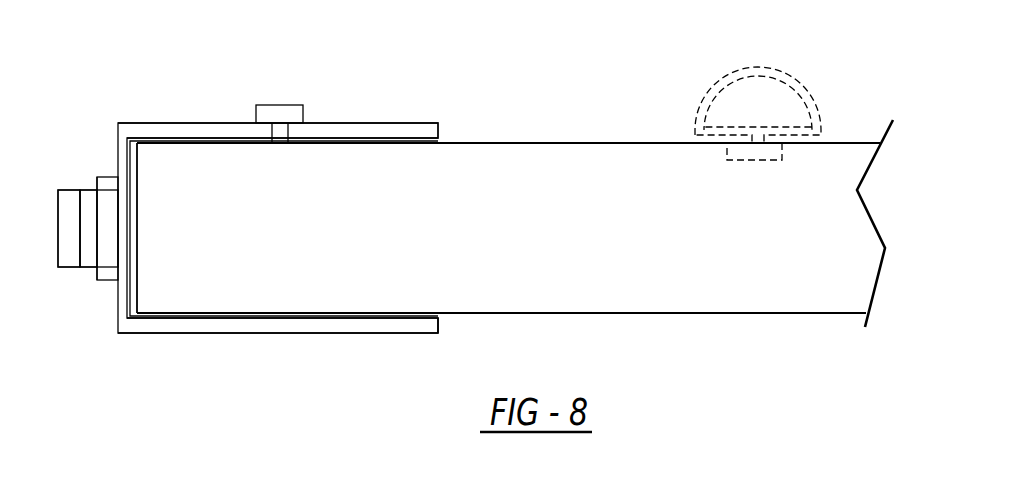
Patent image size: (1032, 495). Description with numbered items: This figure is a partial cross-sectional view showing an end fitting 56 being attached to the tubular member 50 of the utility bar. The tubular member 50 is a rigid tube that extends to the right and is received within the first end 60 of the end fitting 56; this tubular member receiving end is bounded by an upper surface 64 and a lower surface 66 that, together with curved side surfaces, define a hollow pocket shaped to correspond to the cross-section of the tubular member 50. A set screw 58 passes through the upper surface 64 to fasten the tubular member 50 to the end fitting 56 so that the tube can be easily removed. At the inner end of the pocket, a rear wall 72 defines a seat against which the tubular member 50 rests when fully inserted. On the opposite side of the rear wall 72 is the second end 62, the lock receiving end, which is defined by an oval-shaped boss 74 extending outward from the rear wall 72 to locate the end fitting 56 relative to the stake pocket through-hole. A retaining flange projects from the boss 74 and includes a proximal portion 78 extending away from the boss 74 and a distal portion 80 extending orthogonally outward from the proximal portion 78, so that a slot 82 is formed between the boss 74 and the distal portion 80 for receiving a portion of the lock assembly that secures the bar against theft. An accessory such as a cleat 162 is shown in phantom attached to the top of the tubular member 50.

The tubular member 50 is at (650, 316).
The end fitting 56 is at (351, 336).
The set screw 58 is at (280, 113).
The first end 60 is at (450, 327).
The second end 62 is at (73, 288).
The upper surface 64 is at (415, 130).
The lower surface 66 is at (406, 325).
The rear wall 72 is at (128, 283).
The boss 74 is at (108, 228).
The proximal portion 78 is at (90, 255).
The distal portion 80 is at (70, 197).
The slot 82 is at (89, 197).
The cleat 162 is at (748, 67).